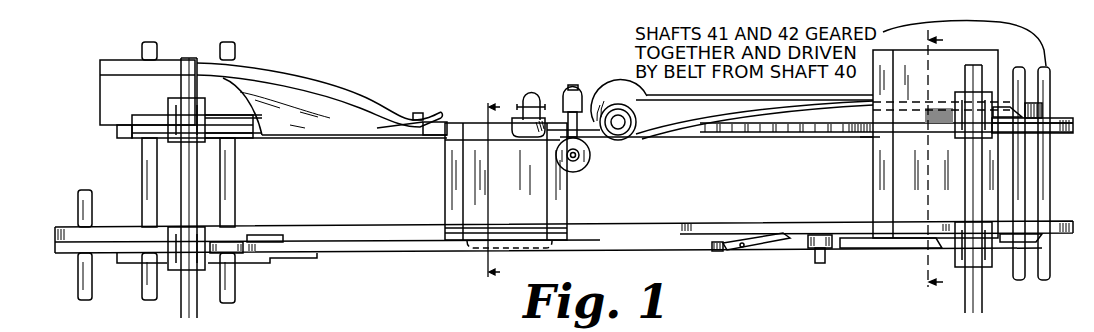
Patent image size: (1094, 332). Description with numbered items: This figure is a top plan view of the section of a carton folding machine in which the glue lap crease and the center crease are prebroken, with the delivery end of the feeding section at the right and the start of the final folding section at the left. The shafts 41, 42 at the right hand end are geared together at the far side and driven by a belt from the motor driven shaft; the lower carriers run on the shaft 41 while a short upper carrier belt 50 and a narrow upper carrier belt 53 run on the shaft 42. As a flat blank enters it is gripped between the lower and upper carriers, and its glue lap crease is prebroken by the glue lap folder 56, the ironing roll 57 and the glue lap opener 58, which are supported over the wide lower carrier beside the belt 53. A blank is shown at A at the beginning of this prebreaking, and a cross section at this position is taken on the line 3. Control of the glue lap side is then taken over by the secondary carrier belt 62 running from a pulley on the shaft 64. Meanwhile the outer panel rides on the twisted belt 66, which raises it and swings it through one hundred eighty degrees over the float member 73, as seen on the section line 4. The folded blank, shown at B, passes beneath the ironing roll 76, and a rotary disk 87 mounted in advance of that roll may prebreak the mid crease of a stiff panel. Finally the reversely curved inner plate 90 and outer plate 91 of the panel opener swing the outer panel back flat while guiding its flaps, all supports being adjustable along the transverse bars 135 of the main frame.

The transverse bar 135 is at (199, 316).
The shaft 64 is at (92, 290).
The endless belt 62 is at (56, 247).
The outer plate 91 is at (323, 88).
The inner plate 90 is at (320, 120).
The float member 73 is at (437, 126).
The blank position B is at (470, 188).
The section line 4 is at (502, 190).
The ironing roll 76 is at (527, 117).
The rotary disk 87 is at (589, 160).
The belt 66 is at (637, 92).
The blank position A is at (900, 152).
The section line 3 is at (944, 162).
The shaft 41 is at (1020, 67).
The shaft 42 is at (1049, 67).
The endless belt 50 is at (1058, 118).
The belt 53 is at (1065, 220).
The glue lap opener 58 is at (755, 245).
The ironing roll 57 is at (809, 249).
The glue lap folder 56 is at (862, 245).